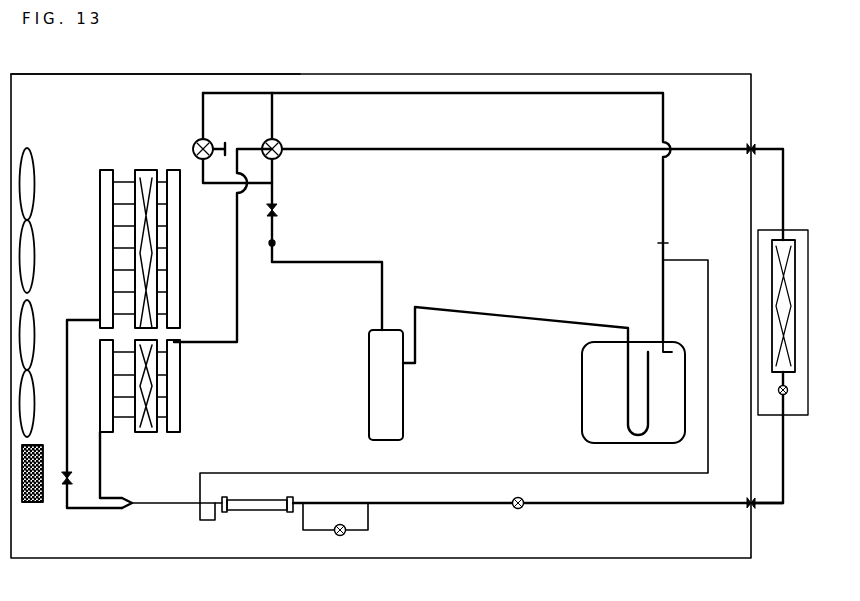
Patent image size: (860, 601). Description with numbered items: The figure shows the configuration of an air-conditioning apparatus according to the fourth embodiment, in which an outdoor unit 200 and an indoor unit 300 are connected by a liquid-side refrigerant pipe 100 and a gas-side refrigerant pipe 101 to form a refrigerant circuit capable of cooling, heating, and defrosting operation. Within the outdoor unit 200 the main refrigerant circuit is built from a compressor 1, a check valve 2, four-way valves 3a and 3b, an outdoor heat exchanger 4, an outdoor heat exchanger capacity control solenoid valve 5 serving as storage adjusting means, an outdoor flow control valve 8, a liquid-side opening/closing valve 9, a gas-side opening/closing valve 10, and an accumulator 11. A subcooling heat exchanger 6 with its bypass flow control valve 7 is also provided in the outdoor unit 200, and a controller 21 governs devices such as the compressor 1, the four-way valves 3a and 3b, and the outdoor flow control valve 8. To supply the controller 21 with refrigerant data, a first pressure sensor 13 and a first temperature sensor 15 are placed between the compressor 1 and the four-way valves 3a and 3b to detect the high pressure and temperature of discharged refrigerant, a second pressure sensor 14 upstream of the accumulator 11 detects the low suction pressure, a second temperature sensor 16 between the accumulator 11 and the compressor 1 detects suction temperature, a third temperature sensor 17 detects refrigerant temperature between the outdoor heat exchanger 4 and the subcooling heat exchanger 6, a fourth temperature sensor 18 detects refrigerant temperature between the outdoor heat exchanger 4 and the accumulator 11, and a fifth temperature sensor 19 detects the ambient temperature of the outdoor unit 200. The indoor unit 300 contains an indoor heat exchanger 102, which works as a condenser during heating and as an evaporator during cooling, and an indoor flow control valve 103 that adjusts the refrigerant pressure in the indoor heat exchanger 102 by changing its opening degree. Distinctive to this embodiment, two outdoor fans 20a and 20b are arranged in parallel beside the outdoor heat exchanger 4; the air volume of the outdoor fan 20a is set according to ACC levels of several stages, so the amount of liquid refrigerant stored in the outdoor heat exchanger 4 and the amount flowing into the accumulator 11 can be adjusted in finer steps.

The compressor 1 is at (404, 412).
The check valve 2 is at (279, 210).
The four-way valve 3a is at (214, 142).
The four-way valve 3b is at (284, 144).
The outdoor heat exchanger 4 is at (100, 170).
The outdoor heat exchanger capacity control solenoid valve 5 is at (71, 470).
The subcooling heat exchanger 6 is at (265, 498).
The subcooling heat exchanger bypass flow control valve 7 is at (335, 534).
The outdoor flow control valve 8 is at (514, 507).
The liquid-side opening/closing valve 9 is at (747, 506).
The gas-side opening/closing valve 10 is at (744, 152).
The accumulator 11 is at (583, 378).
The first pressure sensor 13 is at (280, 243).
The second pressure sensor 14 is at (664, 243).
The first temperature sensor 15 is at (365, 327).
The second temperature sensor 16 is at (422, 338).
The third temperature sensor 17 is at (151, 498).
The fourth temperature sensor 18 is at (608, 96).
The fifth temperature sensor 19 is at (104, 117).
The outdoor fan 20a is at (30, 150).
The outdoor fan 20b is at (32, 310).
The controller 21 is at (40, 504).
The liquid-side refrigerant pipe 100 is at (758, 507).
The gas-side refrigerant pipe 101 is at (762, 149).
The indoor heat exchanger 102 is at (775, 237).
The indoor flow control valve 103 is at (780, 396).
The outdoor unit 200 is at (667, 559).
The indoor unit 300 is at (781, 420).